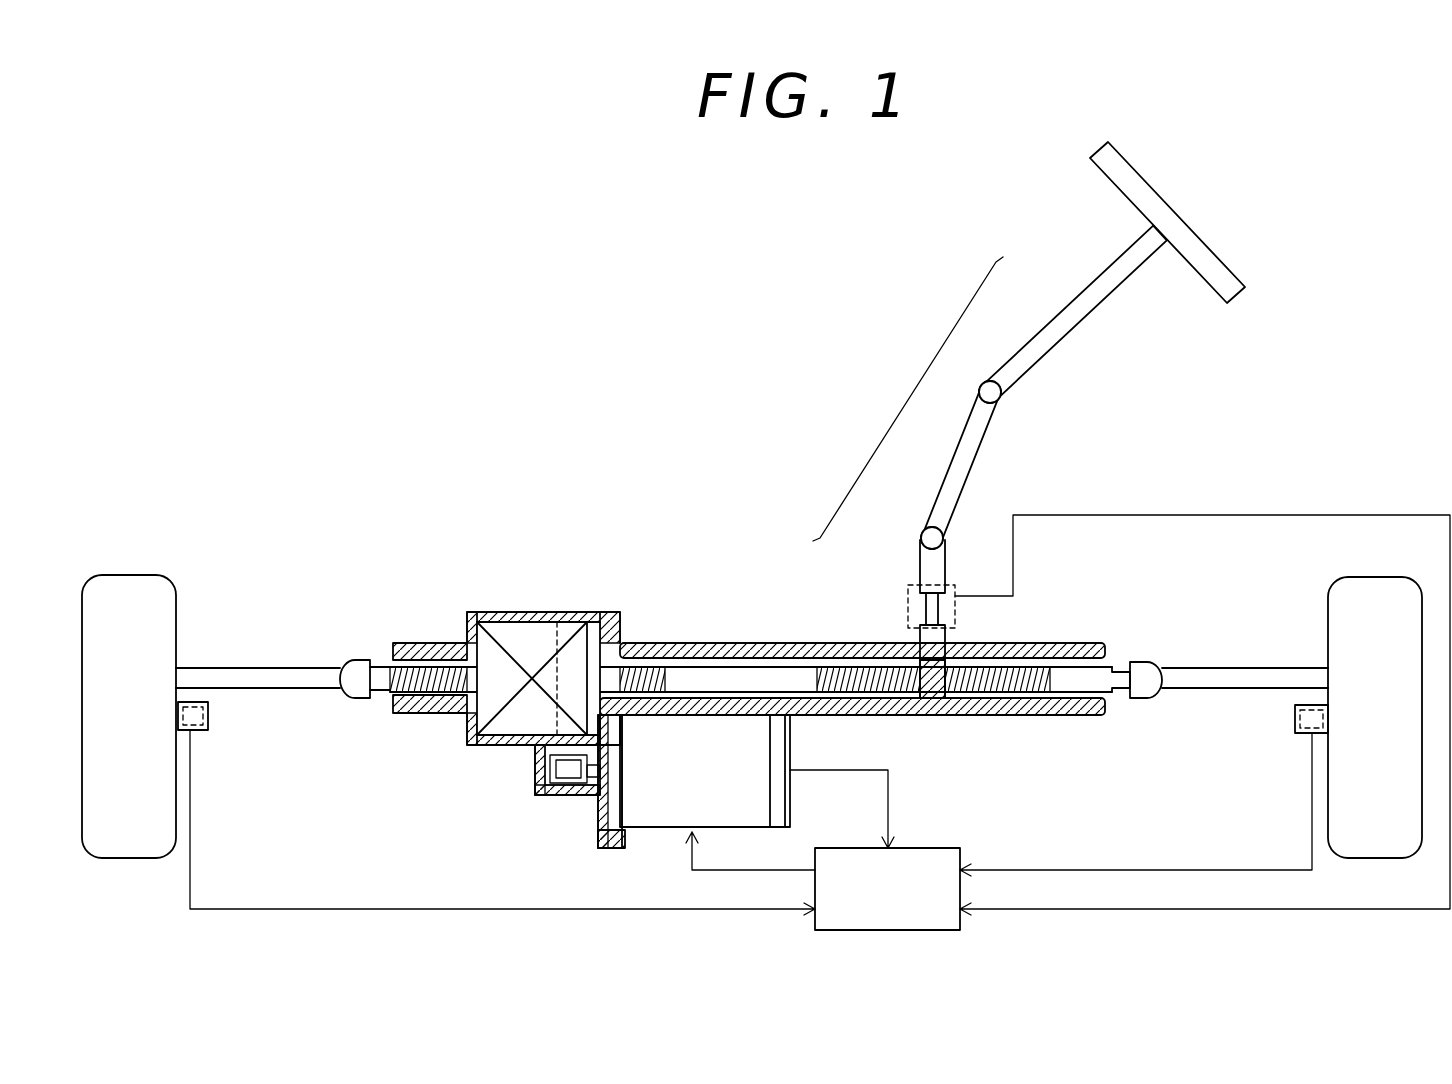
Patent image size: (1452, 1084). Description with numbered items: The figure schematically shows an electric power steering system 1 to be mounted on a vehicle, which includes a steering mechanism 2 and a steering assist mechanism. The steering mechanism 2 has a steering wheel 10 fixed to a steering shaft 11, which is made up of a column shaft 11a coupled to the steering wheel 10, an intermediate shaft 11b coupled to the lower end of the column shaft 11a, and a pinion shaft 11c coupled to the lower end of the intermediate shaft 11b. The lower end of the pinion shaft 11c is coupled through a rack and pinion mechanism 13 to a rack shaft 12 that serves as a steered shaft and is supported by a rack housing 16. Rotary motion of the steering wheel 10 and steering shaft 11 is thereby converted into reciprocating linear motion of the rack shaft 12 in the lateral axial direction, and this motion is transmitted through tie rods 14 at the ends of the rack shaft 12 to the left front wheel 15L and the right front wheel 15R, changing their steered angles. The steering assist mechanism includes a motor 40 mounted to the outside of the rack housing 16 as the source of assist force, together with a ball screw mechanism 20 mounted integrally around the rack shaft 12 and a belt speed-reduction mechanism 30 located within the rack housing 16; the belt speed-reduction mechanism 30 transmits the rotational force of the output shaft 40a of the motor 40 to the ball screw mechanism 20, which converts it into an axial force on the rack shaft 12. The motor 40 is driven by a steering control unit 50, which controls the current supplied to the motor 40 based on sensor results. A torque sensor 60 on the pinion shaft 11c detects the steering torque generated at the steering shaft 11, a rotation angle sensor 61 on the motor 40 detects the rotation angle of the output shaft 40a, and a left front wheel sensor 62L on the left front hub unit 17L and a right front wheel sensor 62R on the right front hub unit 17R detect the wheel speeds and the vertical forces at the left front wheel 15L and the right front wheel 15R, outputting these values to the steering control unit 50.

The electric power steering system 1 is at (1342, 214).
The steering mechanism 2 is at (628, 327).
The steering wheel 10 is at (1196, 241).
The steering shaft 11 is at (906, 393).
The column shaft 11a is at (1068, 291).
The intermediate shaft 11b is at (960, 456).
The pinion shaft 11c is at (915, 570).
The rack shaft 12 is at (1083, 690).
The rack and pinion mechanism 13 is at (961, 729).
The tie rods 14 is at (290, 683).
The left front wheel 15L is at (112, 578).
The right front wheel 15R is at (1355, 580).
The rack housing 16 is at (1027, 713).
The left front hub unit 17L is at (200, 702).
The right front hub unit 17R is at (1303, 700).
The ball screw mechanism 20 is at (467, 718).
The belt speed-reduction mechanism 30 is at (520, 776).
The motor 40 is at (658, 832).
The output shaft 40a is at (592, 796).
The steering control unit 50 is at (938, 848).
The torque sensor 60 is at (952, 584).
The rotation angle sensor 61 is at (783, 811).
The left front wheel sensor 62L is at (211, 716).
The right front wheel sensor 62R is at (1288, 715).